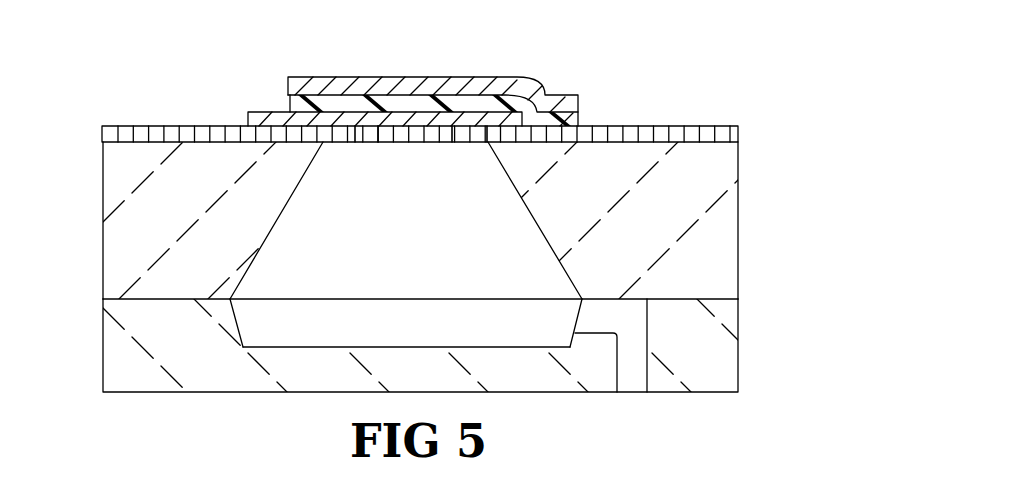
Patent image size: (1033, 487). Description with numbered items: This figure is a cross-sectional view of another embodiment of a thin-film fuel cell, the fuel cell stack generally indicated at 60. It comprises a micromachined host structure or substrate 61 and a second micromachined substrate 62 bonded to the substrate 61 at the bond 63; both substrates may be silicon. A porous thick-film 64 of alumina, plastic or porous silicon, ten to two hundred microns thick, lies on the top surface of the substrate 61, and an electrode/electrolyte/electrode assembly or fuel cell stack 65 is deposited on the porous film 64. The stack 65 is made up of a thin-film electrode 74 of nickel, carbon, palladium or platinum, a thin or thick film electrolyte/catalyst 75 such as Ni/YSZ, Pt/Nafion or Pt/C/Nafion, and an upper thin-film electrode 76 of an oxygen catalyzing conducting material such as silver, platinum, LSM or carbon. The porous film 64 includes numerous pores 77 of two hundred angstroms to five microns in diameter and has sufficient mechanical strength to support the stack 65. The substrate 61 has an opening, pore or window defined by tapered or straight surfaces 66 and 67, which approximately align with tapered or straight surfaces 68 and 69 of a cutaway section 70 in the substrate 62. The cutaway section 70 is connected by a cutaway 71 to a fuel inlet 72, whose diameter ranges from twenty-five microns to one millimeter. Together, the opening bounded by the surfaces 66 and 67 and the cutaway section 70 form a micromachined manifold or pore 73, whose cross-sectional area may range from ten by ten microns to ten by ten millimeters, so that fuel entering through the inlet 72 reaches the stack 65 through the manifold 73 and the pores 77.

The fuel cell stack 60 is at (596, 62).
The micromachined host structure or substrate 61 is at (738, 200).
The micromachined substrate 62 is at (738, 341).
The bond 63 is at (103, 299).
The porous thick-film 64 is at (147, 126).
The electrode/electrolyte/electrode assembly or fuel cell stack 65 is at (396, 32).
The tapered or straight surface 66 is at (293, 197).
The tapered or straight surface 67 is at (529, 218).
The tapered or straight surface 68 is at (243, 327).
The tapered or straight surface 69 is at (570, 345).
The cutaway section 70 is at (403, 347).
The cutaway 71 is at (595, 313).
The fuel inlet 72 is at (633, 378).
The micromachined manifold or pore 73 is at (418, 248).
The thin-film electrode 74 is at (257, 112).
The thin or thick film electrolyte/catalyst 75 is at (288, 96).
The thin-film electrode 76 is at (493, 77).
The pores 77 is at (487, 132).